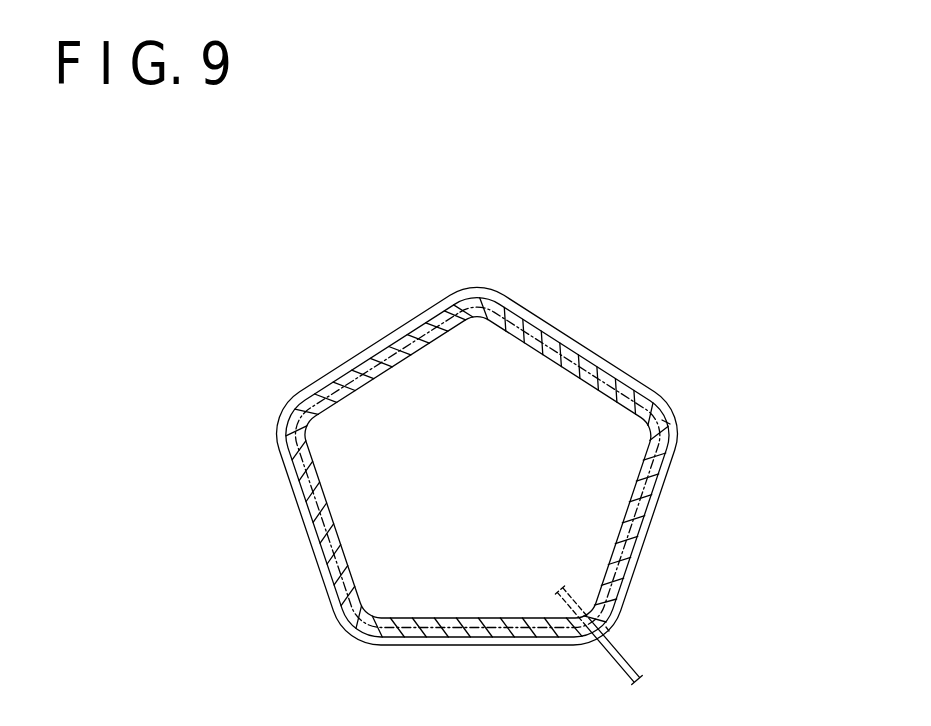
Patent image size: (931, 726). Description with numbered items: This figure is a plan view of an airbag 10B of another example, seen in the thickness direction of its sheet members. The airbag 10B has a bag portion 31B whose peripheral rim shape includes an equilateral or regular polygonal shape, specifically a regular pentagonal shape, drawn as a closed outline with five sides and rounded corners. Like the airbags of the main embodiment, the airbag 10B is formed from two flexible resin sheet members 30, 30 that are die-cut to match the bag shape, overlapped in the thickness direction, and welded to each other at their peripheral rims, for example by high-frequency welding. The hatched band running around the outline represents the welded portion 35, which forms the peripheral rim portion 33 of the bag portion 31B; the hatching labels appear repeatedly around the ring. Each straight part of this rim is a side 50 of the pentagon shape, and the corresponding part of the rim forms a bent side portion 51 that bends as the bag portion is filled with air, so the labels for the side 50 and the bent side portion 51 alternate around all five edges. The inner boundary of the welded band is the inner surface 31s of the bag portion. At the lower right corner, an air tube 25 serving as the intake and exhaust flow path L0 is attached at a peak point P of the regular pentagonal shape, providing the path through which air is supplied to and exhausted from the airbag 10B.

The airbag 10B is at (448, 430).
The bag portion 31B is at (448, 430).
The inner surface 31s is at (328, 446).
The peripheral rim portion 33 is at (477, 431).
The welded portion 35 is at (480, 298).
The side 50 is at (358, 368).
The bent side portion 51 is at (400, 340).
The sheet member 30 is at (659, 523).
The air tube 25 is at (673, 635).
The intake and exhaust flow path L0 is at (645, 668).
The peak point P is at (608, 628).